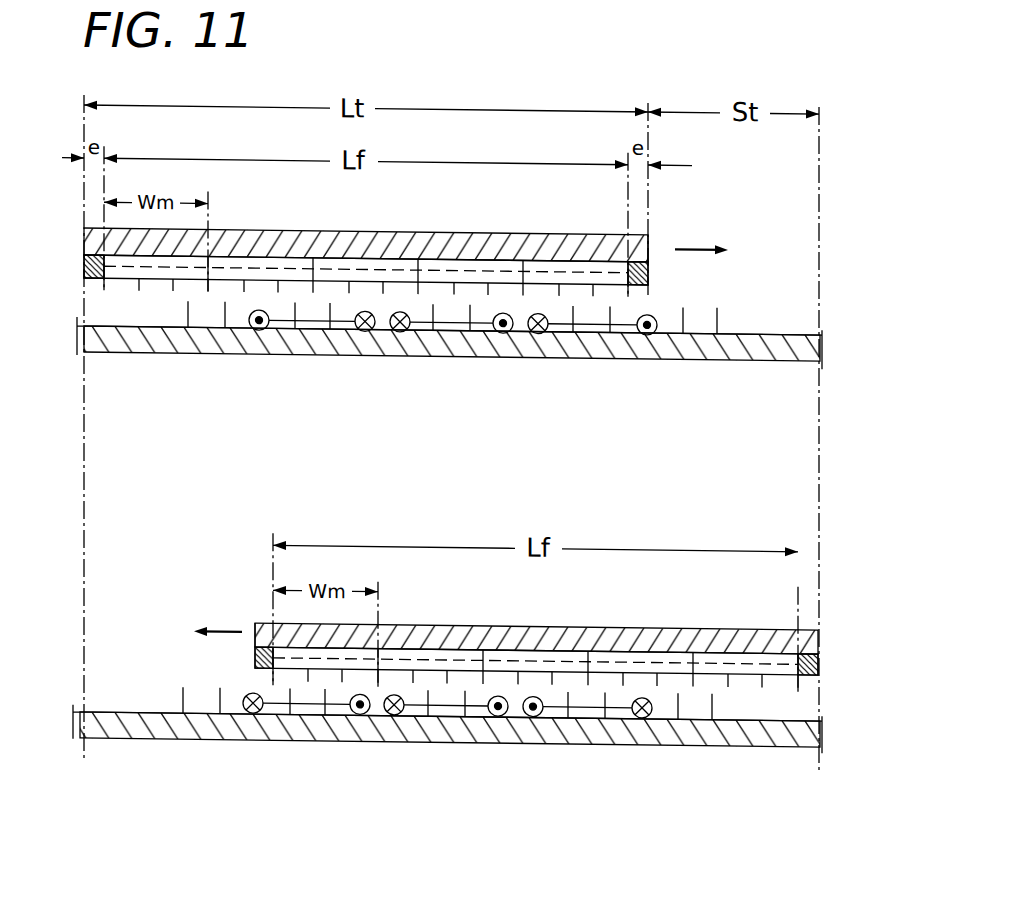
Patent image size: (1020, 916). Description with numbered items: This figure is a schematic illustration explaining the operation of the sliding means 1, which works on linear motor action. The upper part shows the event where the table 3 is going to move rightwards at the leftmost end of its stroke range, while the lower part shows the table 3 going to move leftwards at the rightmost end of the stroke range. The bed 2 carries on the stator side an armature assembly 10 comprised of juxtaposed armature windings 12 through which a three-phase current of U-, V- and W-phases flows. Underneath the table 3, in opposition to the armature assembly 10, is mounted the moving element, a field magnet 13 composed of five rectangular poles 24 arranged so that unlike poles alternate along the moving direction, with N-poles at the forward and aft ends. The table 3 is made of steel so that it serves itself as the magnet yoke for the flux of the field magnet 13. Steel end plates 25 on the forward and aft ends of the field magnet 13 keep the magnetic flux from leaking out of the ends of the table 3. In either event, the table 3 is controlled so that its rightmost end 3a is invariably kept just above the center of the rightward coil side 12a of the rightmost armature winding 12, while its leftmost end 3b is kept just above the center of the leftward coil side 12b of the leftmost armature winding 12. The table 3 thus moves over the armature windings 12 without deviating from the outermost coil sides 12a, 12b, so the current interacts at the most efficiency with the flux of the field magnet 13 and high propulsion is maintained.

The sliding means 1 is at (451, 484).
The bed 2 is at (523, 330).
The table 3 is at (448, 226).
The rightmost end of the table 3a is at (650, 242).
The leftmost end of the table 3b is at (253, 630).
The armature assembly 10 is at (450, 532).
The armature windings 12 is at (320, 320).
The rightward coil side of the rightmost armature winding 12a is at (658, 324).
The leftward coil side of the leftmost armature winding 12b is at (247, 712).
The field magnet 13 is at (329, 252).
The rectangular poles 24 is at (189, 278).
The end plates 25 is at (648, 265).